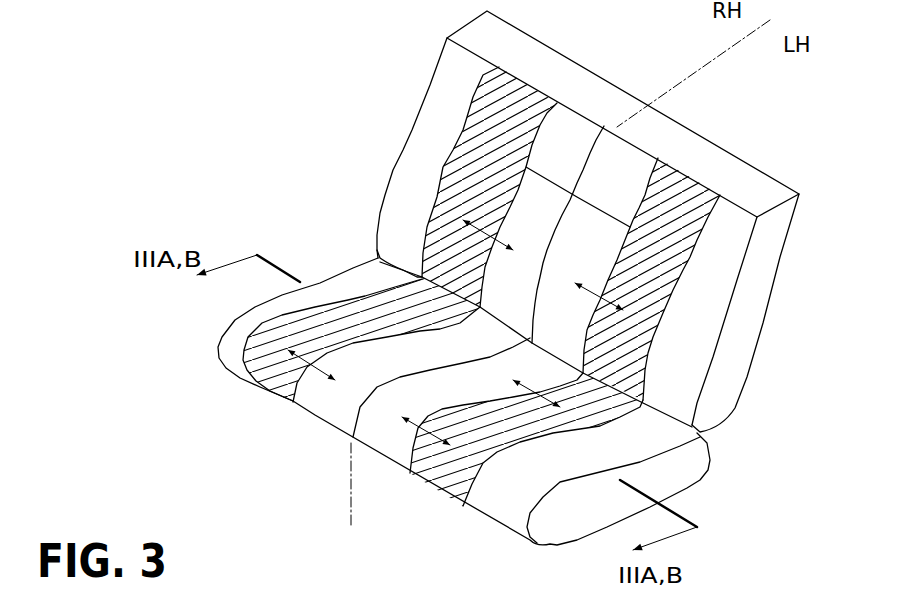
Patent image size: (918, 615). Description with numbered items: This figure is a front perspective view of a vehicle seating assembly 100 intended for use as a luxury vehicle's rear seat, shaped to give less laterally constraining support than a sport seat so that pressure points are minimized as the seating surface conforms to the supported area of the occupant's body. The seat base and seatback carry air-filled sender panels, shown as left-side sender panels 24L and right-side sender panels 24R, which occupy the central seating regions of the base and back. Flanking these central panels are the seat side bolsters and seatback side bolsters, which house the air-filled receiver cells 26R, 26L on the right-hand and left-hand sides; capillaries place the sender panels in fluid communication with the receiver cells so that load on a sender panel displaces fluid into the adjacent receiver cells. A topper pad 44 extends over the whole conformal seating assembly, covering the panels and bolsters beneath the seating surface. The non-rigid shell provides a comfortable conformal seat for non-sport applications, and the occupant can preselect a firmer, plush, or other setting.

The vehicle seating assembly 100 is at (357, 147).
The topper pad 44 is at (461, 60).
The right-side sender panel 24R is at (565, 132).
The left-side sender panel 24L is at (627, 167).
The right bolster 26R is at (503, 100).
The left bolster 26L is at (690, 200).